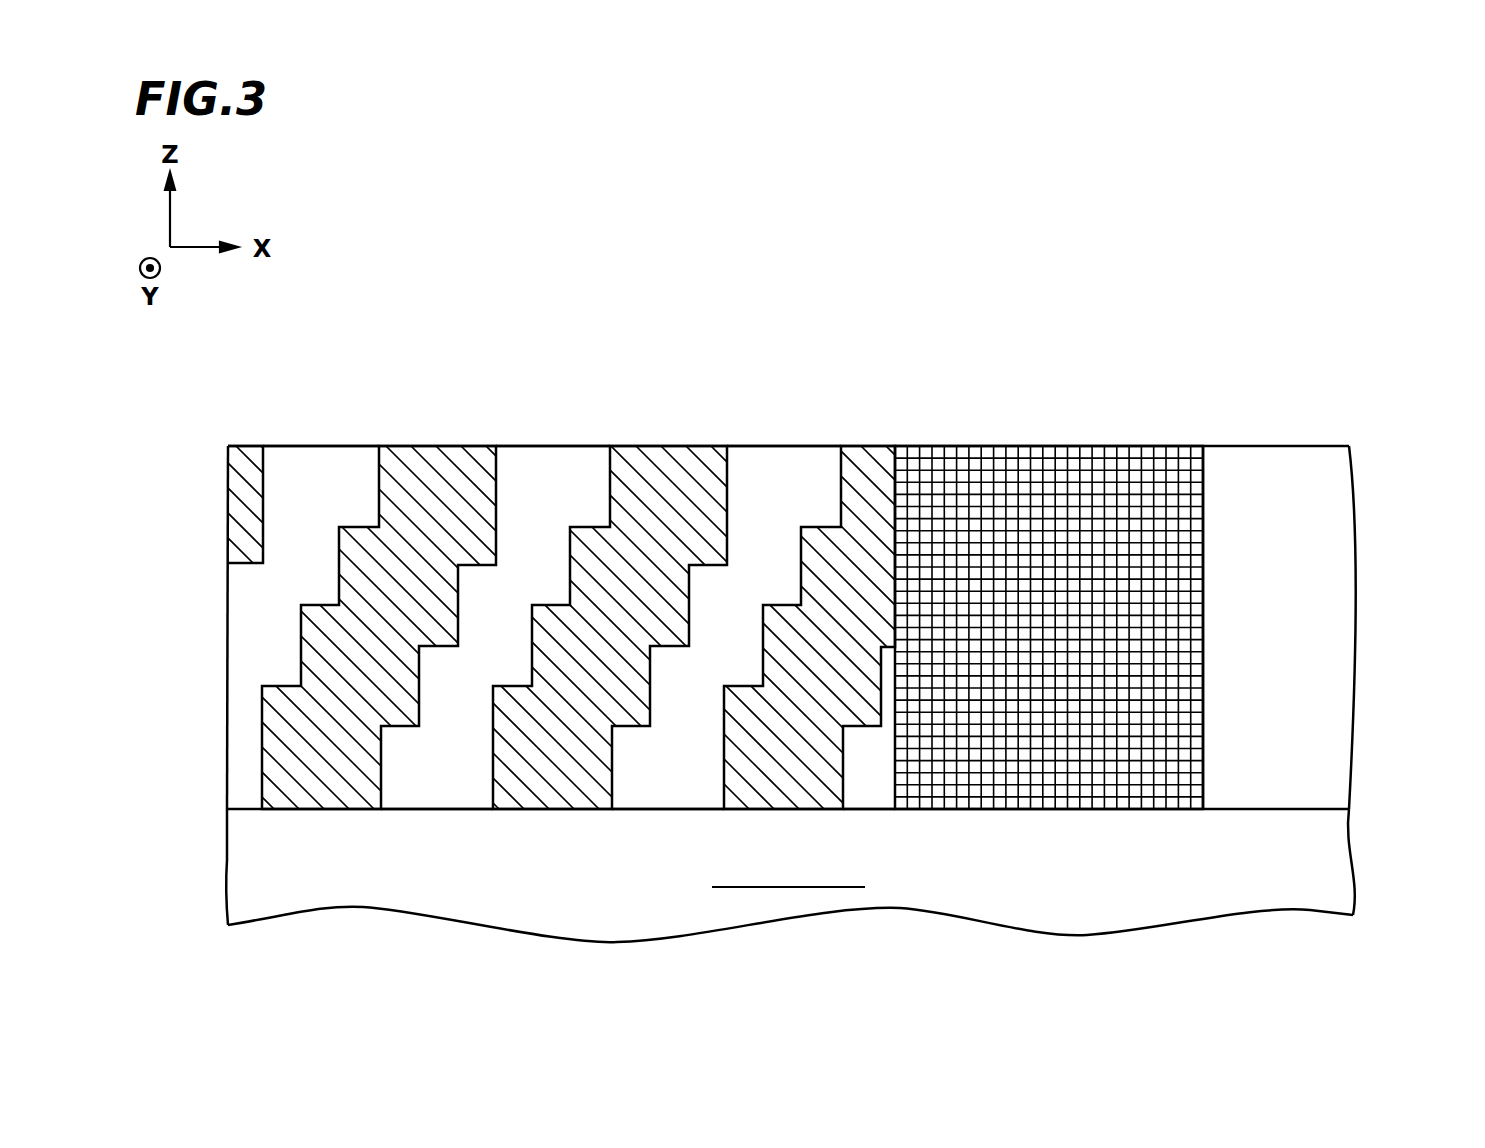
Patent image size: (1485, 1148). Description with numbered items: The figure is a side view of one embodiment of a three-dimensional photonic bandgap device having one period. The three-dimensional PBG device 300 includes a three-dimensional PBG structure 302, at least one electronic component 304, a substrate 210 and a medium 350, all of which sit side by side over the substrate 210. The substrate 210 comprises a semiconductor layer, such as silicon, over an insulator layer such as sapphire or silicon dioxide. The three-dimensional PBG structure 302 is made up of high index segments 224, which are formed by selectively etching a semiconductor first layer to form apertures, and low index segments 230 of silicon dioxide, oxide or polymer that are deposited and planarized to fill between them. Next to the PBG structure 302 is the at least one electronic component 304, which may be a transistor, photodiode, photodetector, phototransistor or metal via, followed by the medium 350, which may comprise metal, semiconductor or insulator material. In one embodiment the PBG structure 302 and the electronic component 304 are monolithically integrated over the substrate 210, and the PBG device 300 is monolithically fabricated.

The 3D PBG device 300 is at (1357, 224).
The 3D PBG structure 302 is at (228, 325).
The electronic component 304 is at (1203, 378).
The low index segments 230 is at (247, 458).
The high index segments 224 is at (264, 592).
The medium 350 is at (1301, 656).
The substrate 210 is at (245, 879).